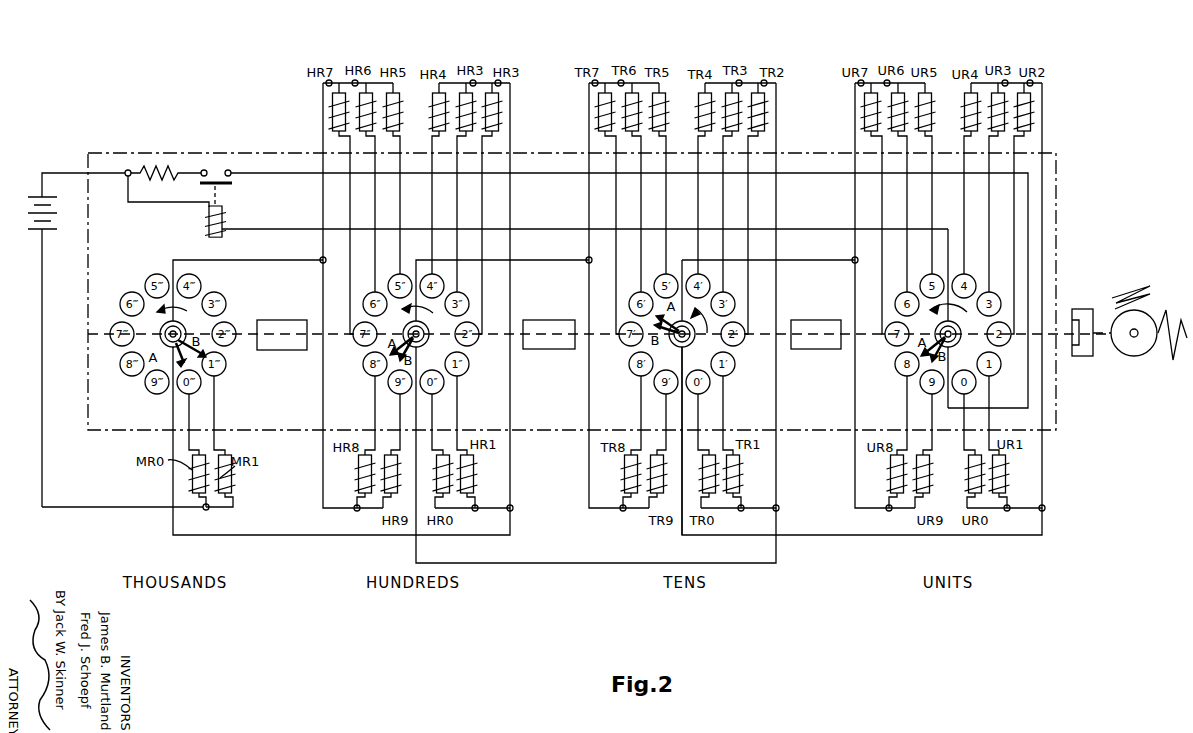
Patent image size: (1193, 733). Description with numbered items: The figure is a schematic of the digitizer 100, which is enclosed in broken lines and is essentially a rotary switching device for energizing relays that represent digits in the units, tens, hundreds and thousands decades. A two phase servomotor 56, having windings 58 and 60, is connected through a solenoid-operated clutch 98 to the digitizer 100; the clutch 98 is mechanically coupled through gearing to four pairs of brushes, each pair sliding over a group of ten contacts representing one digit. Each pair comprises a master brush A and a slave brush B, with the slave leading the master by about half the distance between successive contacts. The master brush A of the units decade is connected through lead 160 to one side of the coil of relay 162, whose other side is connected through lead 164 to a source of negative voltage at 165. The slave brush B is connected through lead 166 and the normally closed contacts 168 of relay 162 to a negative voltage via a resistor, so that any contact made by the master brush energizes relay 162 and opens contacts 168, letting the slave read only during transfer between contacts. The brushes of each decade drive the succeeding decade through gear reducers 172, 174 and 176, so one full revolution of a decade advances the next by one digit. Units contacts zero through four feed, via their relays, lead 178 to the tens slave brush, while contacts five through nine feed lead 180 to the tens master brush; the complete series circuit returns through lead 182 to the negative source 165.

The digitizer 100 is at (192, 153).
The source of negative voltage 165 is at (43, 238).
The lead 182 is at (43, 477).
The gear reducer 174 is at (170, 177).
The normally closed contacts 168 is at (230, 176).
The lead 164 is at (131, 200).
The relay 162 is at (224, 220).
The lead 166 is at (803, 174).
The lead 160 is at (803, 229).
The lead 180 is at (797, 260).
The lead 178 is at (846, 535).
The gear reducer 176 is at (282, 335).
The gear reducer 172 is at (816, 334).
The solenoid-operated clutch 98 is at (1077, 309).
The two phase servomotor 56 is at (1140, 357).
The winding 58 is at (1137, 294).
The winding 60 is at (1176, 323).